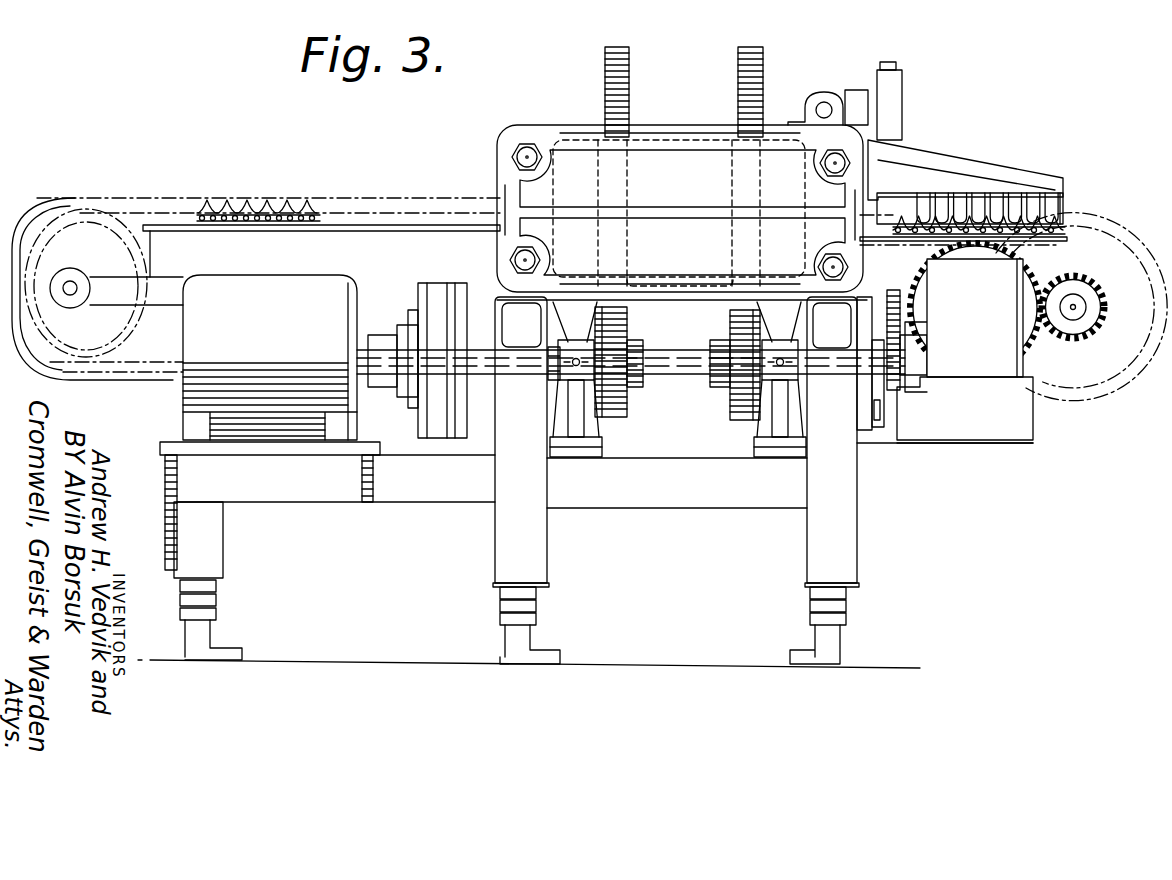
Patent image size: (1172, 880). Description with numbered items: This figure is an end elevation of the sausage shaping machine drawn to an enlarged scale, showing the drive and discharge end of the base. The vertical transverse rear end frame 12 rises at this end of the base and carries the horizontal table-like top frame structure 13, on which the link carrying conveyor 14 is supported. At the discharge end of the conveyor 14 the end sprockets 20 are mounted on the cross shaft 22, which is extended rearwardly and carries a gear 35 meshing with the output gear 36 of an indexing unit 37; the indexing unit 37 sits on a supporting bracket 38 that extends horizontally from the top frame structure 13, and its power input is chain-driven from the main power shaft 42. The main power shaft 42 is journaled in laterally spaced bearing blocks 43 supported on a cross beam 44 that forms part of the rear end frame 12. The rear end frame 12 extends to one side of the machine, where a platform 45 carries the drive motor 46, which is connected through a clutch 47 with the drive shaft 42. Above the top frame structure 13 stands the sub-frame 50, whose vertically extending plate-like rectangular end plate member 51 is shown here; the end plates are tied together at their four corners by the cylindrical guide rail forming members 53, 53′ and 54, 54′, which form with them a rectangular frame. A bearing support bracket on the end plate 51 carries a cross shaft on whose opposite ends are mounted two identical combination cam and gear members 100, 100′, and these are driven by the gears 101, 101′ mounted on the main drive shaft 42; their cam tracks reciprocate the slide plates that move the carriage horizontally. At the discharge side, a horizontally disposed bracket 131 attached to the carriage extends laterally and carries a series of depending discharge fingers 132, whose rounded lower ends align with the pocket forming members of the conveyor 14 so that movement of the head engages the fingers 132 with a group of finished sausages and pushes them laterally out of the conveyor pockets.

The rear end frame 12 is at (495, 522).
The top frame structure 13 is at (502, 318).
The conveyor 14 is at (313, 208).
The end sprockets 20 is at (1102, 358).
The cross shaft 22 is at (1078, 314).
The gear 35 is at (1083, 284).
The output gear 36 is at (985, 236).
The indexing unit 37 is at (993, 300).
The supporting bracket 38 is at (968, 440).
The main power shaft 42 is at (677, 372).
The bearing blocks 43 is at (590, 432).
The cross beam 44 is at (650, 497).
The platform 45 is at (178, 442).
The drive motor 46 is at (273, 344).
The clutch 47 is at (440, 415).
The sub-frame 50 is at (870, 140).
The end plate member 51 is at (662, 170).
The guide rail forming member 53 is at (838, 153).
The guide rail forming member 53′ is at (843, 268).
The guide rail forming member 54 is at (516, 151).
The guide rail forming member 54′ is at (512, 259).
The combination cam and gear member 100 is at (764, 54).
The combination cam and gear member 100′ is at (630, 54).
The gear 101 is at (733, 324).
The gear 101′ is at (626, 334).
The bracket 131 is at (955, 160).
The discharge fingers 132 is at (1015, 216).